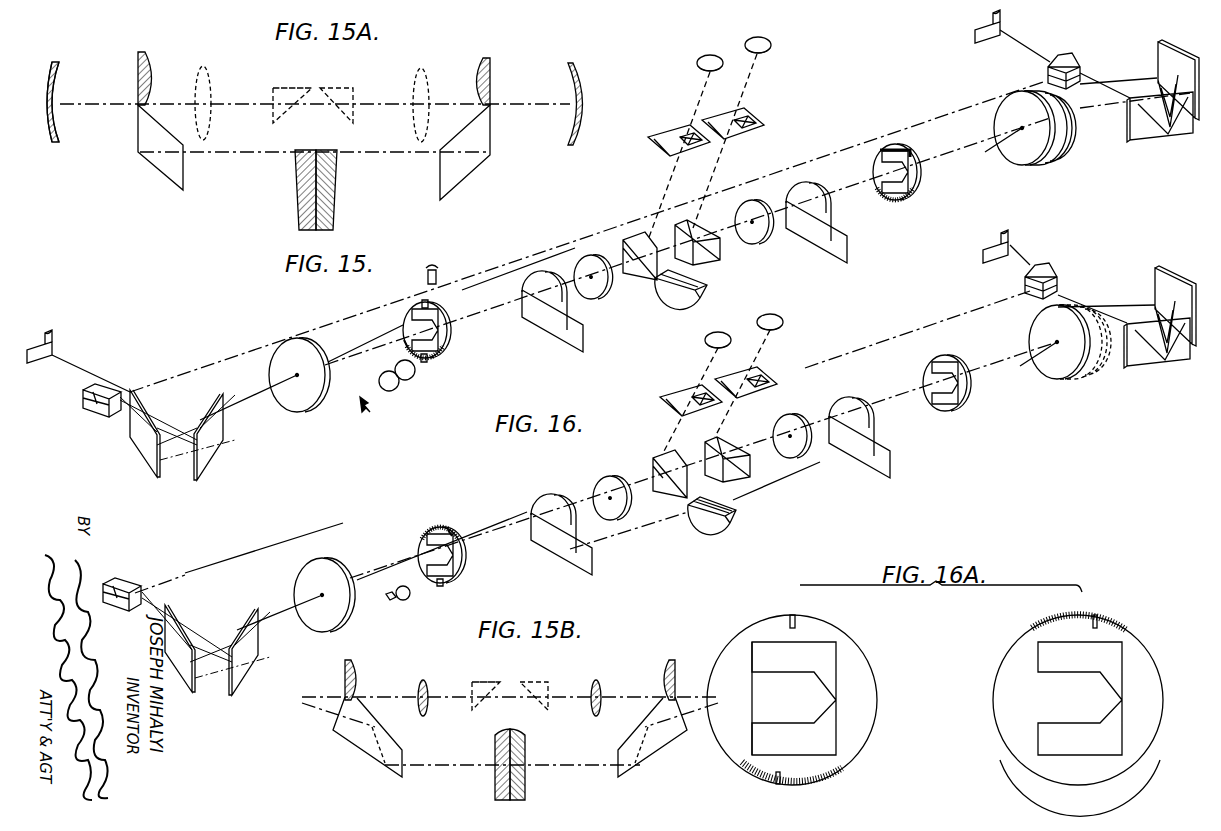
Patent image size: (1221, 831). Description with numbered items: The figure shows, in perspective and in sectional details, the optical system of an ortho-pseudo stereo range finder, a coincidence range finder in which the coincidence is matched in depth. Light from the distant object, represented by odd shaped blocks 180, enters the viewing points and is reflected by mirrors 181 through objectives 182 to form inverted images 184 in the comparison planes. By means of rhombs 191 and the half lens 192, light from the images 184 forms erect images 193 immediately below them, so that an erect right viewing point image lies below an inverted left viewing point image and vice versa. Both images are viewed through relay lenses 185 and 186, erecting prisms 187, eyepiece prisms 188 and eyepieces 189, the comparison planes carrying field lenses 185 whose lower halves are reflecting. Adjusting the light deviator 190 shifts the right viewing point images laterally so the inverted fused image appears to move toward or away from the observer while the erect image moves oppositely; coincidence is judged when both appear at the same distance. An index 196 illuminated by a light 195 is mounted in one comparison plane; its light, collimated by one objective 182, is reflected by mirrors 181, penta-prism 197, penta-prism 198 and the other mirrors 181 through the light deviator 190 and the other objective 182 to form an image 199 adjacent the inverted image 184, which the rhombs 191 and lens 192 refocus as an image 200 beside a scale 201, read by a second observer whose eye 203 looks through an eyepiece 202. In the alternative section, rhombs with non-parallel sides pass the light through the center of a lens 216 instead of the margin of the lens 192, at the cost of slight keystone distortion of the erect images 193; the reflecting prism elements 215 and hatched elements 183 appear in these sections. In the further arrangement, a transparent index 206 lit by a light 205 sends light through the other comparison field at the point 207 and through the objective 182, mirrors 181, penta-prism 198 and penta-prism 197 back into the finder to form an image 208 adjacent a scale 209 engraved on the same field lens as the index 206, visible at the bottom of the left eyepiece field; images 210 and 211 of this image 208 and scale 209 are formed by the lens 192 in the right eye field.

In FIG. 15, the odd shaped blocks 180 is at (55, 338).
In FIG. 16, the odd shaped blocks 180 is at (1010, 243).
In FIG. 15, the mirrors 181 is at (197, 478).
In FIG. 16, the mirrors 181 is at (232, 682).
In FIG. 15, the objectives 182 is at (285, 398).
In FIG. 16, the objectives 182 is at (300, 588).
In FIG. 15A, the lens / graduated band 183 is at (62, 76).
In FIG. 15, the lens / graduated band 183 is at (440, 352).
In FIG. 15, the inverted images 184 is at (440, 318).
In FIG. 16A, the inverted images 184 is at (752, 748).
In FIG. 15A, the relay lenses 185 is at (150, 66).
In FIG. 15, the relay lenses 185 is at (538, 288).
In FIG. 16, the relay lenses 185 is at (540, 502).
In FIG. 15B, the relay lenses 185 is at (356, 680).
In FIG. 15A, the relay lenses 186 is at (212, 80).
In FIG. 15, the relay lenses 186 is at (586, 254).
In FIG. 16, the relay lenses 186 is at (600, 490).
In FIG. 15B, the relay lenses 186 is at (428, 685).
In FIG. 15A, the erecting prisms 187 is at (335, 88).
In FIG. 15, the erecting prisms 187 is at (635, 235).
In FIG. 16, the erecting prisms 187 is at (715, 455).
In FIG. 15B, the erecting prisms 187 is at (528, 688).
In FIG. 15, the eyepiece prisms 188 is at (705, 122).
In FIG. 16, the eyepiece prisms 188 is at (708, 392).
In FIG. 15, the eyepieces 189 is at (750, 47).
In FIG. 16, the eyepieces 189 is at (731, 345).
In FIG. 15, the light deviator 190 is at (1065, 150).
In FIG. 16, the light deviator 190 is at (1095, 365).
In FIG. 15A, the rhombs 191 is at (158, 165).
In FIG. 15, the rhombs 191 is at (565, 345).
In FIG. 16, the rhombs 191 is at (575, 562).
In FIG. 15A, the half lens 192 is at (300, 200).
In FIG. 15, the half lens 192 is at (672, 300).
In FIG. 16, the half lens 192 is at (720, 528).
In FIG. 15, the erect images 193 is at (447, 340).
In FIG. 16A, the erect images 193 is at (835, 652).
In FIG. 15, the light 195 is at (437, 275).
In FIG. 15A, the index 196 is at (51, 63).
In FIG. 15, the index 196 is at (418, 303).
In FIG. 15, the penta-prism 197 is at (95, 418).
In FIG. 16, the penta-prism 197 is at (125, 580).
In FIG. 15, the penta-prism 198 is at (1078, 62).
In FIG. 16, the penta-prism 198 is at (1055, 275).
In FIG. 15, the image 199 is at (905, 158).
In FIG. 15, the image 200 is at (425, 362).
In FIG. 15A, the scale 201 is at (50, 142).
In FIG. 15, the scale 201 is at (405, 352).
In FIG. 15, the eyepiece 202 is at (405, 381).
In FIG. 15, the eye 203 is at (362, 413).
In FIG. 16, the light 205 is at (400, 604).
In FIG. 16, the transparent index 206 is at (442, 586).
In FIG. 16A, the transparent index 206 is at (798, 618).
In FIG. 16, the point 207 is at (948, 360).
In FIG. 16A, the point 207 is at (1100, 780).
In FIG. 16, the image 208 is at (455, 540).
In FIG. 16A, the image 208 is at (776, 782).
In FIG. 16, the scale 209 is at (440, 533).
In FIG. 16A, the scale 209 is at (840, 768).
In FIG. 16A, the image 210 is at (1100, 618).
In FIG. 16A, the image 211 is at (1125, 632).
In FIG. 15B, the prism 215 is at (374, 762).
In FIG. 15B, the lens 216 is at (495, 785).